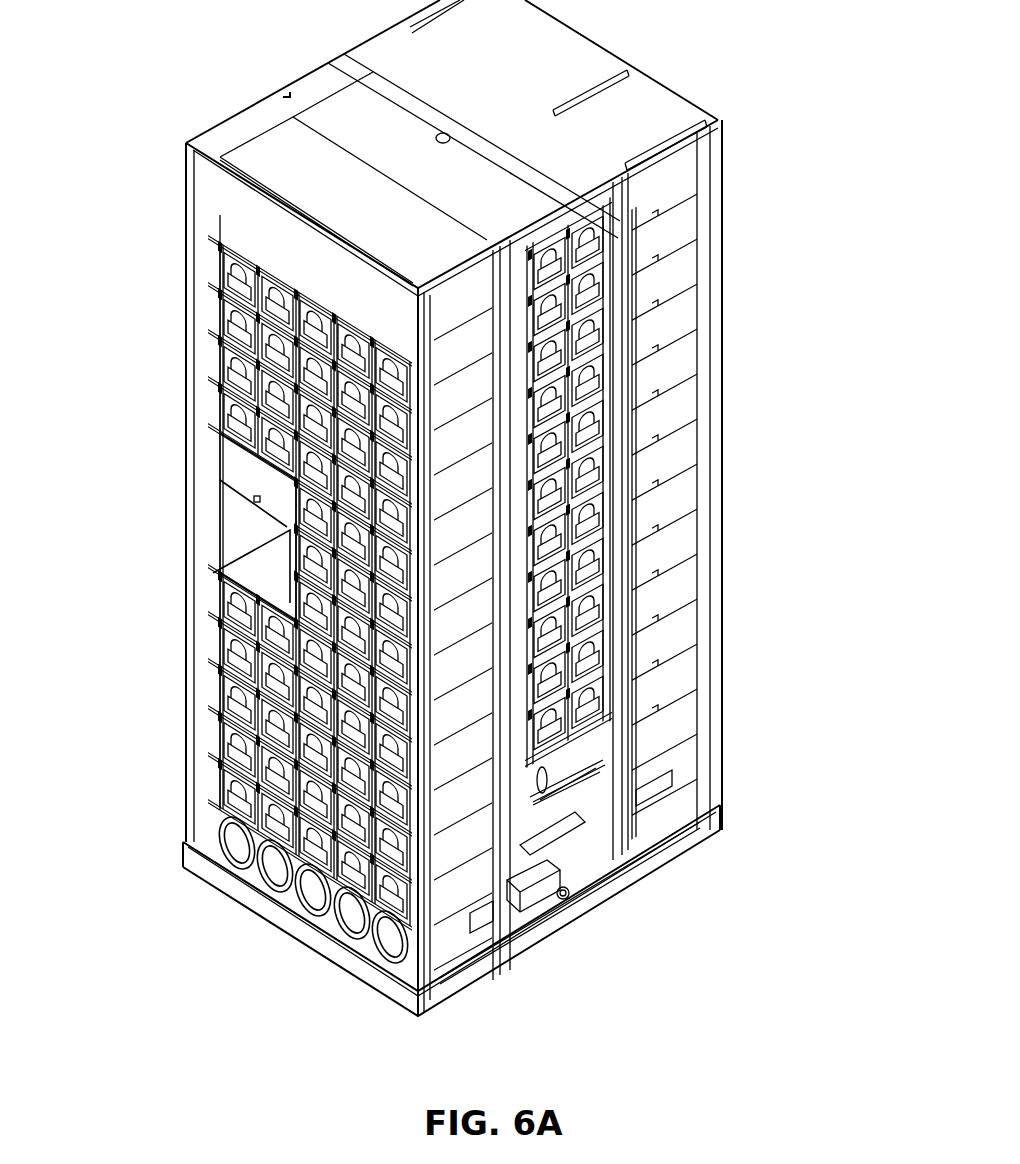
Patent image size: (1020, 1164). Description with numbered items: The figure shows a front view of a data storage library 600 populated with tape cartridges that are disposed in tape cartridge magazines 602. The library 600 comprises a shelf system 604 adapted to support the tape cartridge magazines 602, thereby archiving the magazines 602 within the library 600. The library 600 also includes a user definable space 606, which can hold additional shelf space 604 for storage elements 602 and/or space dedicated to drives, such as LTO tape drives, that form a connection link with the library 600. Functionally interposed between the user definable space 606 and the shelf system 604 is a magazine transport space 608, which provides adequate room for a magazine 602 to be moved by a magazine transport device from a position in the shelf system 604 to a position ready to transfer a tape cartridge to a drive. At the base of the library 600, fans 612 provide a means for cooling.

The data storage library 600 is at (449, 508).
The tape cartridge magazines 602 is at (212, 658).
The shelf system 604 is at (668, 520).
The user definable space 606 is at (232, 533).
The magazine transport space 608 is at (580, 810).
The fans 612 is at (230, 895).